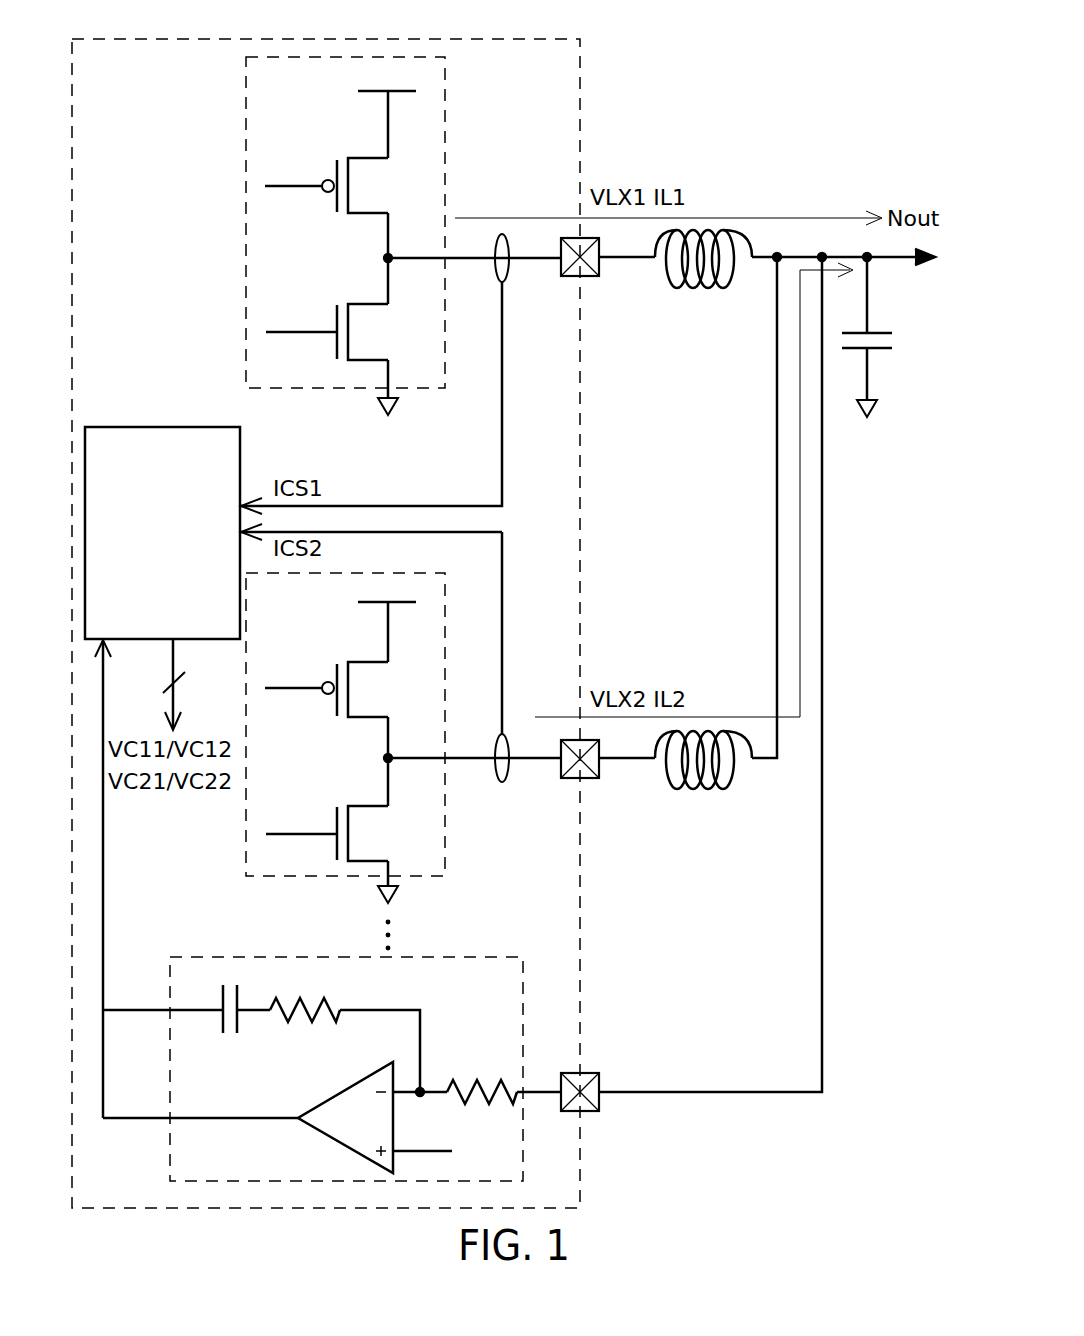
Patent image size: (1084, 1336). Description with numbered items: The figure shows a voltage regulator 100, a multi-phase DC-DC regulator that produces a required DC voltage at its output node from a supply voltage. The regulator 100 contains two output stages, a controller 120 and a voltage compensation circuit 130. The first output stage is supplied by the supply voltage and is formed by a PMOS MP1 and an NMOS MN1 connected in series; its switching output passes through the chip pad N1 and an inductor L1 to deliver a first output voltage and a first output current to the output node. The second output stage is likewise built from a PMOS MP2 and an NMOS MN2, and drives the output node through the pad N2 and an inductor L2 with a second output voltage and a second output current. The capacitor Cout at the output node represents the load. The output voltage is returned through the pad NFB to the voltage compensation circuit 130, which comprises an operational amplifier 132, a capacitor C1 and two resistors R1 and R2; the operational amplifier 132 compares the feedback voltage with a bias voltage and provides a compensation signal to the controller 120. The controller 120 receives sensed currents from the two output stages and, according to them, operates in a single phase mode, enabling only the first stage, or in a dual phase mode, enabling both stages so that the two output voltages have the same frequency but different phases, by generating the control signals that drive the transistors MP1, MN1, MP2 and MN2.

The voltage regulator 100 is at (547, 38).
The controller 120 is at (145, 427).
The voltage compensation circuit 130 is at (205, 958).
The operational amplifier 132 is at (338, 1093).
The PMOS MP1 is at (348, 185).
The NMOS MN1 is at (350, 332).
The PMOS MP2 is at (348, 688).
The NMOS MN2 is at (350, 833).
The pad N1 is at (590, 276).
The pad N2 is at (590, 778).
The inductor L1 is at (710, 288).
The inductor L2 is at (710, 790).
The capacitor Cout is at (888, 337).
The resistor R1 is at (305, 995).
The capacitor C1 is at (230, 1025).
The resistor R2 is at (482, 1079).
The pad NFB is at (603, 1084).